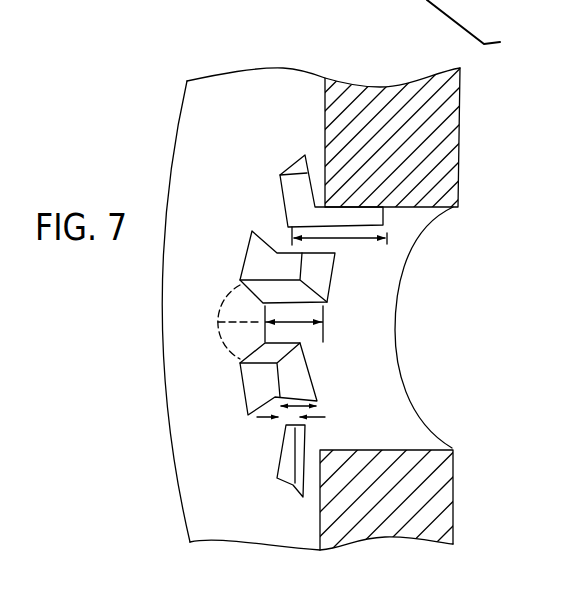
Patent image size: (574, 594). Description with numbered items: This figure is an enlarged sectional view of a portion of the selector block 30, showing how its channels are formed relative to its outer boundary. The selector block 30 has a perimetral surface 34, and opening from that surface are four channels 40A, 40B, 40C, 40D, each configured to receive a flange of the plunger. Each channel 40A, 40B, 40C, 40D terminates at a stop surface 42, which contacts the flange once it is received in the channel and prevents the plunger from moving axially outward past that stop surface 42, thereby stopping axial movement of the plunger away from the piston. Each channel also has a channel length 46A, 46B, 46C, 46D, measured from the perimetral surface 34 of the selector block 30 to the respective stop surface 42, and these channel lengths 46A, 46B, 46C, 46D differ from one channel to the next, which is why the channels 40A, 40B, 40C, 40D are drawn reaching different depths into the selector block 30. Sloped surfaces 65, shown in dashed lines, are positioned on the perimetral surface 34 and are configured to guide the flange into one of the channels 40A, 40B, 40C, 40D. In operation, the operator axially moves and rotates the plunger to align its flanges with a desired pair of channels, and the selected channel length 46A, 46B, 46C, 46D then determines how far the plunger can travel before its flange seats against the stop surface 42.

The selector block 30 is at (137, 122).
The perimetral surface 34 is at (245, 97).
The channel 40A is at (295, 184).
The channel 40B is at (253, 260).
The channel 40C is at (262, 388).
The channel 40D is at (296, 486).
The stop surface 42 is at (390, 211).
The channel length 46A is at (351, 240).
The channel length 46B is at (304, 327).
The channel length 46C is at (296, 403).
The channel length 46D is at (263, 420).
The sloped surfaces 65 is at (229, 292).